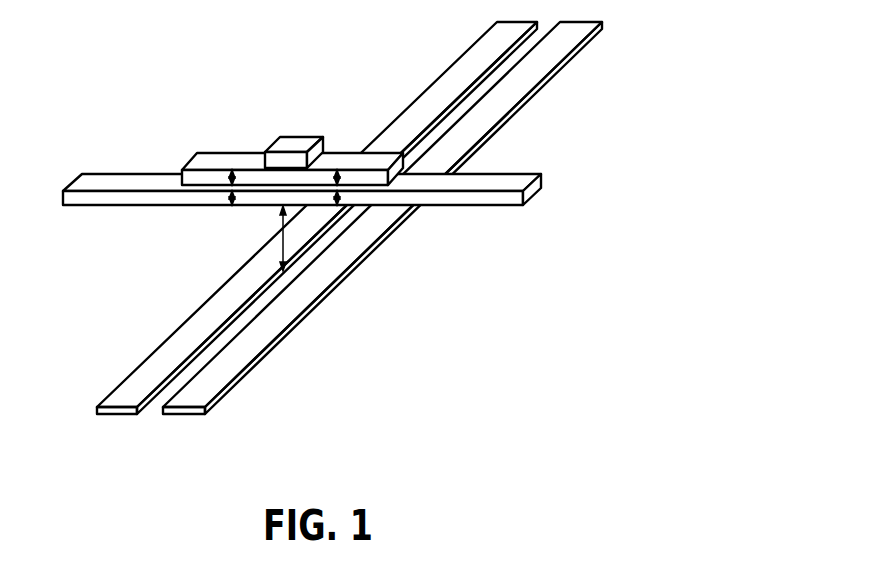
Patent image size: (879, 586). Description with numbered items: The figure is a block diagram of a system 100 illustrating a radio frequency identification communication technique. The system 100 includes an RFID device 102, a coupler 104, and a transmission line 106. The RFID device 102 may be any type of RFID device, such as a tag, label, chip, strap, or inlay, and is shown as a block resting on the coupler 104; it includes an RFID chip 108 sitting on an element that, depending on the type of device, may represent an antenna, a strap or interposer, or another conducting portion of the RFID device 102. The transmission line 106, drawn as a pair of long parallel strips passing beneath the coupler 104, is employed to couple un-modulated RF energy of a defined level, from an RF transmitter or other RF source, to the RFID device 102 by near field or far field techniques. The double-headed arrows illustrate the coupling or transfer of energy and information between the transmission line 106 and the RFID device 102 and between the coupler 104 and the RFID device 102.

The system 100 is at (324, 218).
The RFID device 102 is at (286, 115).
The coupler 104 is at (502, 187).
The transmission line 106 is at (324, 218).
The RFID chip 108 is at (292, 147).